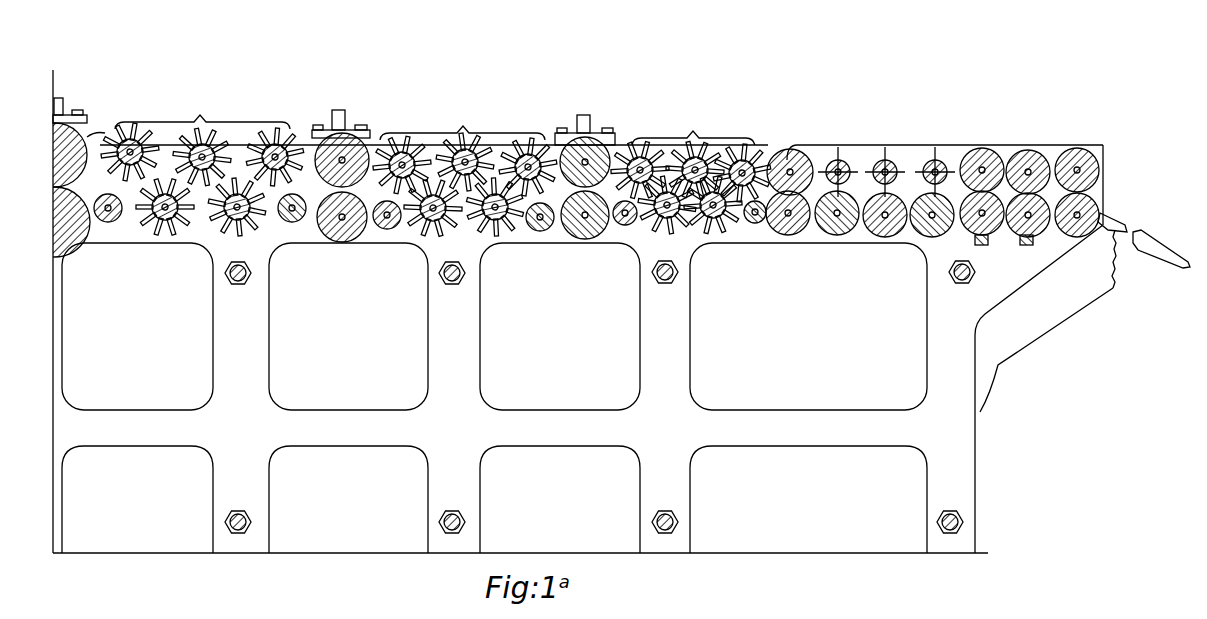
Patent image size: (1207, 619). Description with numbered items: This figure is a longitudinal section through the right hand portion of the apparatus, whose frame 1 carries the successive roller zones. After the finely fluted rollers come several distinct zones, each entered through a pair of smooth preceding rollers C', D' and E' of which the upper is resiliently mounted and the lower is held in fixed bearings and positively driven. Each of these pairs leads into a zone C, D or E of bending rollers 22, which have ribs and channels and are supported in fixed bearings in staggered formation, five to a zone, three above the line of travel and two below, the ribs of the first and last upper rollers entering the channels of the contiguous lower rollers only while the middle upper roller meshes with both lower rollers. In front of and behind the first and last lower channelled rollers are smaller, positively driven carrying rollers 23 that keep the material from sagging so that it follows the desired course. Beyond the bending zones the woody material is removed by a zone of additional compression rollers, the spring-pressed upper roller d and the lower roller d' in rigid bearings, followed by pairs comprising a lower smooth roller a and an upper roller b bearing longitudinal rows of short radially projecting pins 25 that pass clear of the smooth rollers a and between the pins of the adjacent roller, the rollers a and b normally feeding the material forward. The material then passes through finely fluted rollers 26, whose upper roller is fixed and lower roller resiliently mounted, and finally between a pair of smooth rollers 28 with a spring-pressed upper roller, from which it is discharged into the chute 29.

The frame 1 is at (281, 314).
The bending rollers 22 is at (212, 232).
The carrying rollers 23 is at (108, 222).
The pins 25 is at (882, 160).
The finely fluted rollers 26 is at (1024, 152).
The smooth rollers 28 is at (1092, 205).
The chute 29 is at (1148, 240).
The preceding rollers C' is at (62, 169).
The zone of bending rollers C is at (202, 110).
The preceding rollers D' is at (334, 163).
The zone of bending rollers D is at (462, 122).
The preceding rollers E' is at (573, 165).
The zone of bending rollers E is at (693, 127).
The upper additional compression roller d is at (792, 152).
The lower additional compression roller d' is at (788, 237).
The lower smooth roller a is at (843, 234).
The upper pin roller b is at (888, 158).